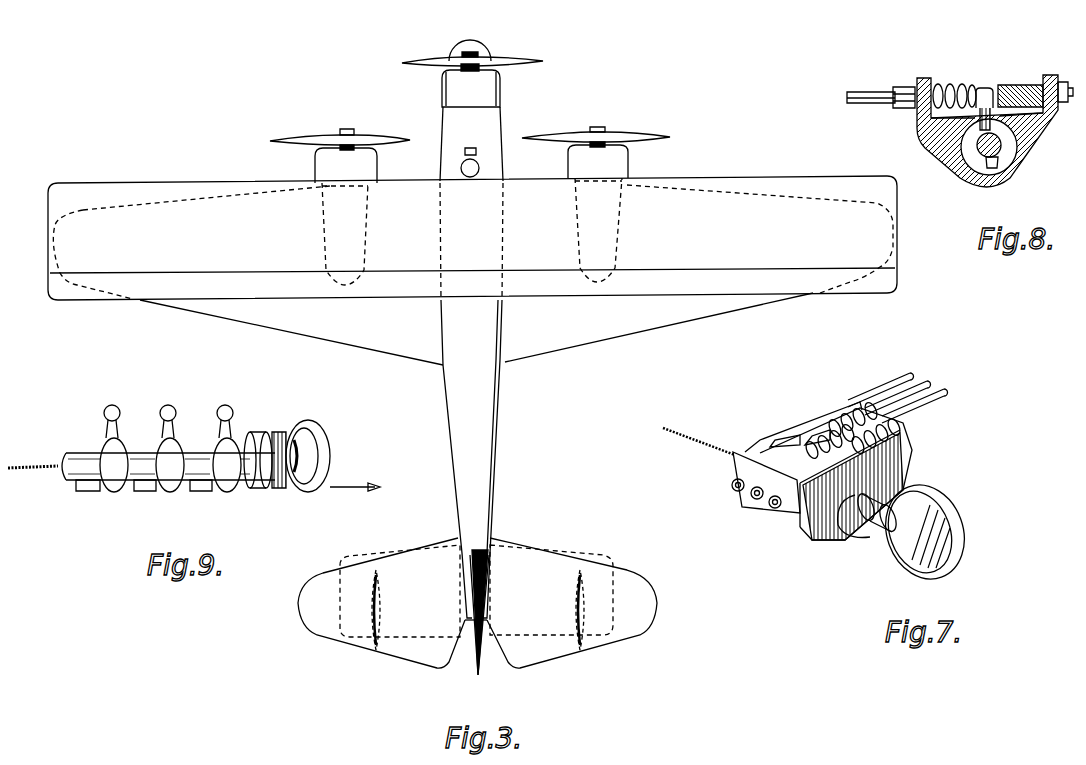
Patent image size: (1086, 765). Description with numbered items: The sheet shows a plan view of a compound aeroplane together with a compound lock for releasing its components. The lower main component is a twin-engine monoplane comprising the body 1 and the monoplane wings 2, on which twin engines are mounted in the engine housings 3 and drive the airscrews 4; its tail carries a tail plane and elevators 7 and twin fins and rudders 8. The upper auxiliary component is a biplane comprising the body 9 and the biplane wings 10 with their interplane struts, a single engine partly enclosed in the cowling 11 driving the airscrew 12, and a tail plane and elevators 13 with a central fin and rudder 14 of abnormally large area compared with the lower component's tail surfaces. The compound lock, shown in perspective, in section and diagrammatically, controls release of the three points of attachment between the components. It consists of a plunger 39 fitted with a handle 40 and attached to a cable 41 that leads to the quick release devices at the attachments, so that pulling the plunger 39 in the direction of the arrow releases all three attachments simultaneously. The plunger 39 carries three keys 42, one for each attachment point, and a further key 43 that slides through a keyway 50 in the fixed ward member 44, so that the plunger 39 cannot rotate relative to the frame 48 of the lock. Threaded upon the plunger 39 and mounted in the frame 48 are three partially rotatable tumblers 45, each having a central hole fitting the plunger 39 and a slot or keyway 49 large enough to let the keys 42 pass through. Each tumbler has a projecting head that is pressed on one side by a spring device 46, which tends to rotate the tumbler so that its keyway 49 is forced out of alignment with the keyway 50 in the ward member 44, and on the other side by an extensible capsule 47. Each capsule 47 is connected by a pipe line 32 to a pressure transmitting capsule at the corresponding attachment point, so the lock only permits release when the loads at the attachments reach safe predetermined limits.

In FIG. 3, the body 1 is at (499, 122).
In FIG. 3, the monoplane wings 2 is at (790, 202).
In FIG. 3, the engine housings 3 is at (322, 200).
In FIG. 3, the airscrews 4 is at (285, 140).
In FIG. 3, the tail plane and elevators 7 is at (400, 570).
In FIG. 3, the twin fins and rudders 8 is at (370, 587).
In FIG. 3, the body 9 is at (488, 432).
In FIG. 3, the biplane wings 10 is at (150, 190).
In FIG. 3, the cowling 11 is at (450, 88).
In FIG. 3, the airscrew 12 is at (505, 60).
In FIG. 3, the tail plane and elevators 13 is at (313, 623).
In FIG. 3, the central fin and rudder 14 is at (472, 652).
In FIG. 8, the pipe line 32 is at (866, 92).
In FIG. 7, the pipe line 32 is at (905, 395).
In FIG. 8, the plunger 39 is at (960, 163).
In FIG. 9, the plunger 39 is at (85, 458).
In FIG. 7, the plunger 39 is at (735, 458).
In FIG. 9, the handle 40 is at (305, 425).
In FIG. 7, the handle 40 is at (958, 505).
In FIG. 9, the cable 41 is at (12, 460).
In FIG. 7, the cable 41 is at (663, 437).
In FIG. 8, the keys 42 is at (985, 165).
In FIG. 9, the keys 42 is at (85, 491).
In FIG. 9, the key 43 is at (252, 488).
In FIG. 9, the fixed ward member 44 is at (260, 432).
In FIG. 7, the fixed ward member 44 is at (858, 535).
In FIG. 8, the tumblers 45 is at (982, 90).
In FIG. 9, the tumblers 45 is at (104, 413).
In FIG. 7, the tumblers 45 is at (808, 435).
In FIG. 8, the spring device 46 is at (1015, 85).
In FIG. 7, the spring device 46 is at (782, 445).
In FIG. 8, the extensible capsule 47 is at (948, 83).
In FIG. 7, the extensible capsule 47 is at (835, 415).
In FIG. 8, the frame 48 is at (930, 135).
In FIG. 7, the frame 48 is at (800, 530).
In FIG. 8, the slot or keyway 49 is at (1000, 160).
In FIG. 9, the slot or keyway 49 is at (104, 491).
In FIG. 9, the keyway 50 is at (278, 490).
In FIG. 7, the keyway 50 is at (870, 540).